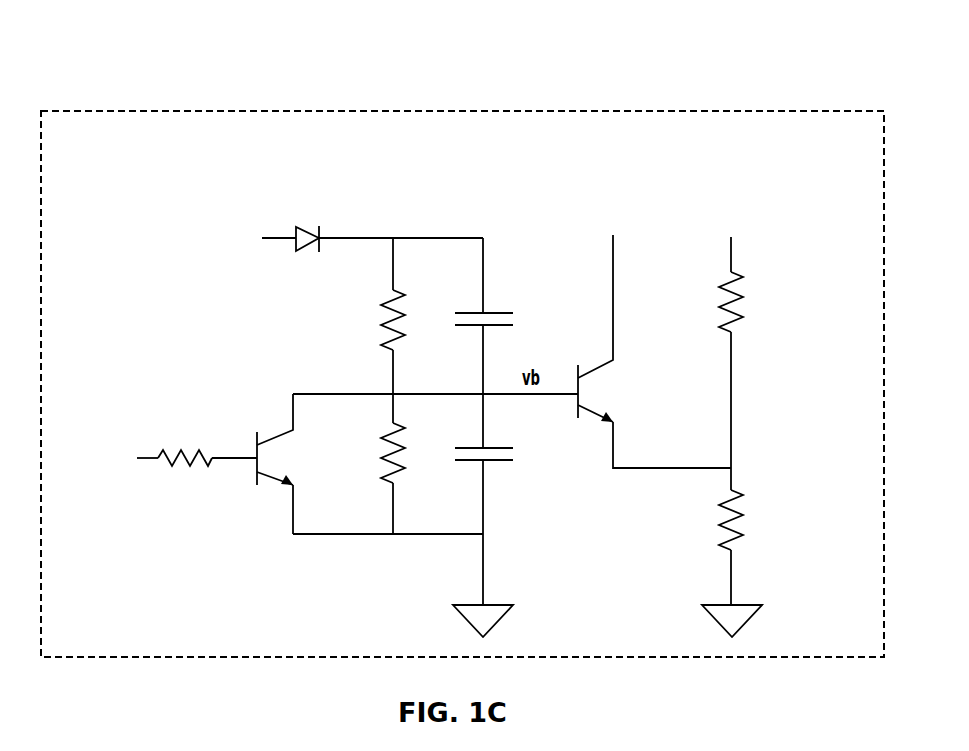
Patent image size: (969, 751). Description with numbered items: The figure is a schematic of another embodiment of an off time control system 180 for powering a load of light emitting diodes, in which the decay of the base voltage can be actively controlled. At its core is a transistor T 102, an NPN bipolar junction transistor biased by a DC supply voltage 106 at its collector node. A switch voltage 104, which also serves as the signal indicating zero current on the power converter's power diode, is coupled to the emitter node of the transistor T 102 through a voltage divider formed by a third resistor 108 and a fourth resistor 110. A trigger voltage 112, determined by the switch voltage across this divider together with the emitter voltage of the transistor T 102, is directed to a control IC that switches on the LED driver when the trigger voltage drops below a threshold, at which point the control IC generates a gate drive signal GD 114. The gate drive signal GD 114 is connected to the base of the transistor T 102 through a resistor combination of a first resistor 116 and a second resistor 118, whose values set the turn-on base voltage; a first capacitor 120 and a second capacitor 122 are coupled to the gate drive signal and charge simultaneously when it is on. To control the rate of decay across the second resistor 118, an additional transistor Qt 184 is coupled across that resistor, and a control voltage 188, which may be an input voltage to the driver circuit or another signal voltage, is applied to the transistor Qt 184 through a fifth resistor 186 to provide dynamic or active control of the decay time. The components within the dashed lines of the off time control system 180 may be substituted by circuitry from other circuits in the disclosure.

The off time control system 180 is at (735, 80).
The gate drive signal GD 114 is at (262, 230).
The resistor R1 116 is at (338, 308).
The capacitor C1 120 is at (545, 303).
The resistor R2 118 is at (343, 445).
The capacitor C2 122 is at (545, 462).
The transistor Qt 184 is at (247, 396).
The resistor R5 186 is at (170, 408).
The control voltage Vctrl 188 is at (118, 447).
The transistor T 102 is at (632, 380).
The DC voltage Vcc 106 is at (623, 213).
The switch voltage VSW 104 is at (745, 213).
The resistor R3 108 is at (792, 295).
The trigger voltage ZCD 112 is at (785, 405).
The resistor R4 110 is at (787, 520).